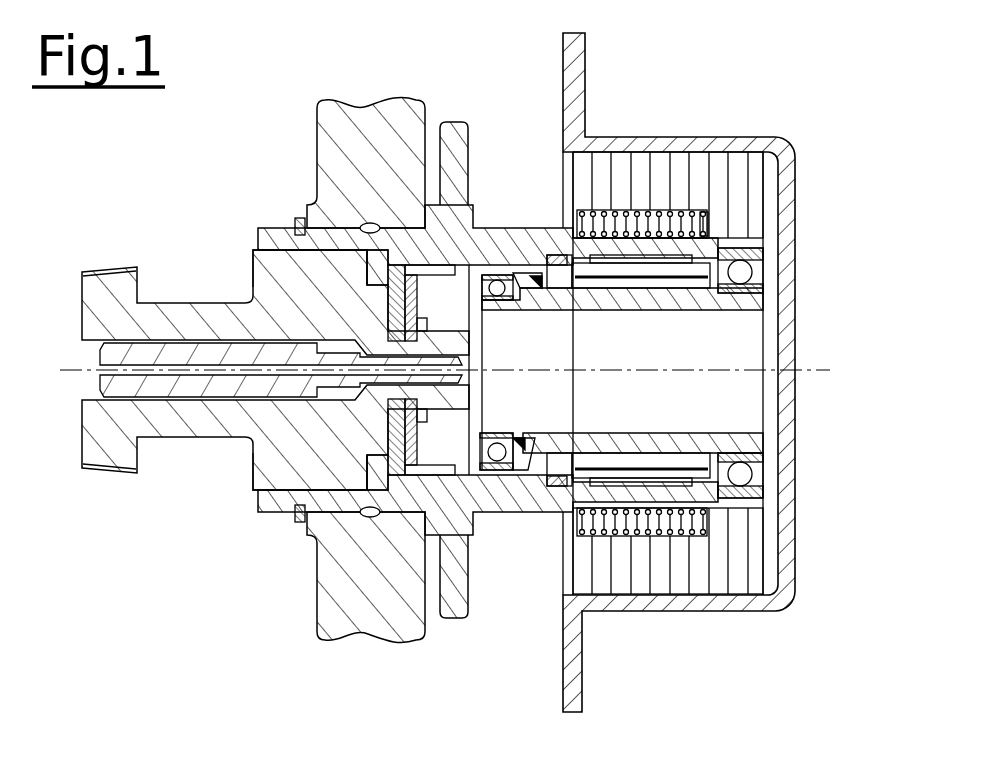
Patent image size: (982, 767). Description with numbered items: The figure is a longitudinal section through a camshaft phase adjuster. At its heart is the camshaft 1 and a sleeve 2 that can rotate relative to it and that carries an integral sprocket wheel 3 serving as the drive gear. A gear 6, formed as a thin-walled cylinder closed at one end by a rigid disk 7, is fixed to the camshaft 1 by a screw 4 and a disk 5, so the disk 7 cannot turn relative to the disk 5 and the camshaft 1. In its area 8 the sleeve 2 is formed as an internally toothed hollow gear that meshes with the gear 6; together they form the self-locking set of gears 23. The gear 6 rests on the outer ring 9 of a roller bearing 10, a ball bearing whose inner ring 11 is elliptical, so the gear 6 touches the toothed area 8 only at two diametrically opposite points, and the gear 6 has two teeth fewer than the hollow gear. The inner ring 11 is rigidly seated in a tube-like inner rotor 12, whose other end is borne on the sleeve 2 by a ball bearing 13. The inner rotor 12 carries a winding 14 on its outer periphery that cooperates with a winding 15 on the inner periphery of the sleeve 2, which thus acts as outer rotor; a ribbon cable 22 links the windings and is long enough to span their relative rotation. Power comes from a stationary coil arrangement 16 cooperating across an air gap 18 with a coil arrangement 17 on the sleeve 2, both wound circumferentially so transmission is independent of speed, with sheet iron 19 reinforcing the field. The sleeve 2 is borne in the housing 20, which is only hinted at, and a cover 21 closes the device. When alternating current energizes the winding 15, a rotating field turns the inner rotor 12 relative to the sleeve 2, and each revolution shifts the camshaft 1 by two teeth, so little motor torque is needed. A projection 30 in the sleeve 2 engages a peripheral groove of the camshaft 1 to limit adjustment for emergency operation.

The camshaft 1 is at (178, 422).
The sleeve 2 is at (453, 223).
The sprocket wheel 3 is at (458, 132).
The screw 4 is at (237, 382).
The disk 5 is at (345, 270).
The gear 6 is at (468, 292).
The rigid disk 7 is at (383, 473).
The internally toothed area 8 is at (495, 470).
The outer ring 9 is at (506, 273).
The roller bearing 10 is at (537, 432).
The inner ring 11 is at (495, 432).
The inner rotor 12 is at (702, 443).
The ball bearing 13 is at (762, 260).
The winding 14 is at (678, 283).
The winding 15 is at (665, 270).
The stationary coil arrangement 16 is at (613, 213).
The coil arrangement 17 is at (710, 237).
The air gap 18 is at (750, 223).
The sheet iron 19 is at (678, 575).
The housing 20 is at (363, 605).
The cover 21 is at (788, 522).
The ribbon cable 22 is at (557, 486).
The set of gears 23 is at (550, 308).
The projection 30 is at (366, 273).